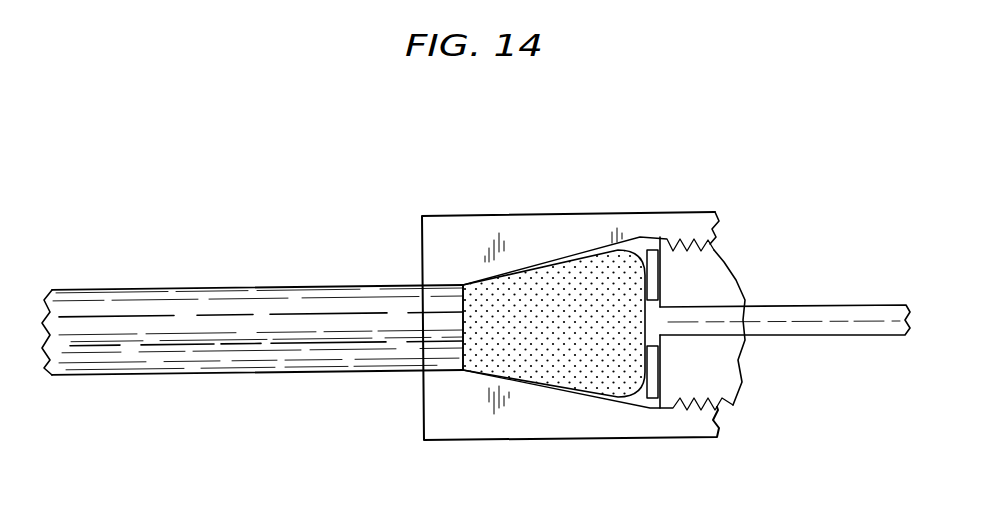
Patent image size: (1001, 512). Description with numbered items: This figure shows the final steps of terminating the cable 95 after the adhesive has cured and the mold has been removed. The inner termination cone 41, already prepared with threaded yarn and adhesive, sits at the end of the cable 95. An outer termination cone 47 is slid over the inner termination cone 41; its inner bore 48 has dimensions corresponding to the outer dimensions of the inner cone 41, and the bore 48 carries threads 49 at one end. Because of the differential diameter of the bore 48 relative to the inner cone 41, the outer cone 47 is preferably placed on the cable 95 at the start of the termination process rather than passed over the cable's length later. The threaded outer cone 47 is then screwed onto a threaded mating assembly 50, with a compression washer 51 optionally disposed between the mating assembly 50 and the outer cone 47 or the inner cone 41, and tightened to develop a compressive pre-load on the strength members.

The inner termination cone 41 is at (557, 255).
The outer termination cone 47 is at (410, 396).
The inner bore 48 is at (462, 268).
The threads 49 is at (699, 240).
The threaded mating assembly 50 is at (778, 278).
The compression washer 51 is at (658, 368).
The cable 95 is at (112, 305).